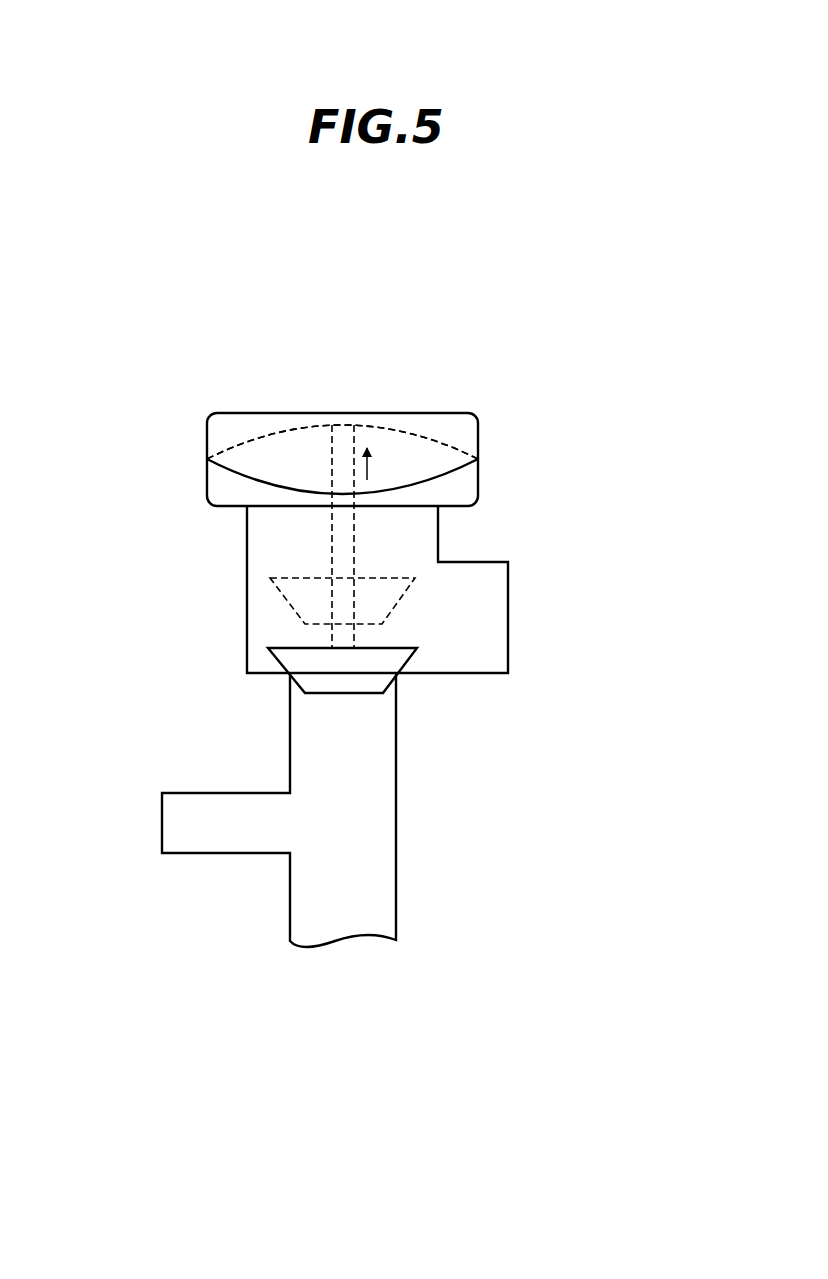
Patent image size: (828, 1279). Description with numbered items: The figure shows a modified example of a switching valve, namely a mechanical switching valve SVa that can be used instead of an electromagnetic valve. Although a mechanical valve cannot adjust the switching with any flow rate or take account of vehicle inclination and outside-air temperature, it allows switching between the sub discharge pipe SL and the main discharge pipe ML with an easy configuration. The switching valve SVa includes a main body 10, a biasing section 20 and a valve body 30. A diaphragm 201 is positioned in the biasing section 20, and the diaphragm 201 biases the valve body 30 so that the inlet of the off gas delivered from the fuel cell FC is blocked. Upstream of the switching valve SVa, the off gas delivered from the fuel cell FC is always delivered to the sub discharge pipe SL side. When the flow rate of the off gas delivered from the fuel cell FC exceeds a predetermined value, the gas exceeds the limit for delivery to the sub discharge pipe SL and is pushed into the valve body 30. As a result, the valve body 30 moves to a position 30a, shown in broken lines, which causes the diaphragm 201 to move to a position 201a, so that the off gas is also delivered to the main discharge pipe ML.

The switching valve SVa is at (449, 311).
The biasing section 20 is at (478, 435).
The diaphragm 201 is at (403, 480).
The position of the diaphragm 201a is at (262, 438).
The main body 10 is at (438, 535).
The valve body 30 is at (407, 657).
The position of the valve body 30a is at (402, 598).
The main discharge pipe ML is at (538, 612).
The sub discharge pipe SL is at (138, 825).
The fuel cell FC is at (348, 973).